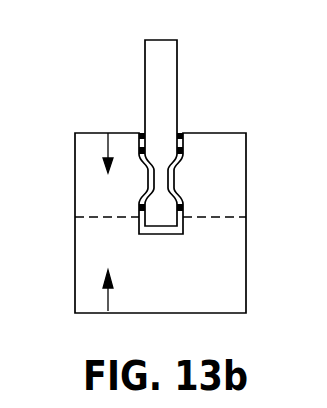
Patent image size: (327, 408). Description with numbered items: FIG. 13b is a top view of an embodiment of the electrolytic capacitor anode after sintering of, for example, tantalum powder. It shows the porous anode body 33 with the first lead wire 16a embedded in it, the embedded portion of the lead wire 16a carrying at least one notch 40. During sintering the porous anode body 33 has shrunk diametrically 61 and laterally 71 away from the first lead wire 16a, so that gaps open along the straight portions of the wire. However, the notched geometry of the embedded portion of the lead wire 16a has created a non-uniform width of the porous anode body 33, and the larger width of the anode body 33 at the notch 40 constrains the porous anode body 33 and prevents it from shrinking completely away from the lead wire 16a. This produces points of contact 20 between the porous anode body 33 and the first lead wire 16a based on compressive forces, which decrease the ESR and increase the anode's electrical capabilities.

The first lead wire 16a is at (160, 93).
The diametric shrinkage 61 is at (142, 129).
The lateral shrinkage 71 is at (95, 143).
The notch 40 is at (148, 178).
The porous anode body 33 is at (228, 171).
The points of contact 20 is at (184, 208).